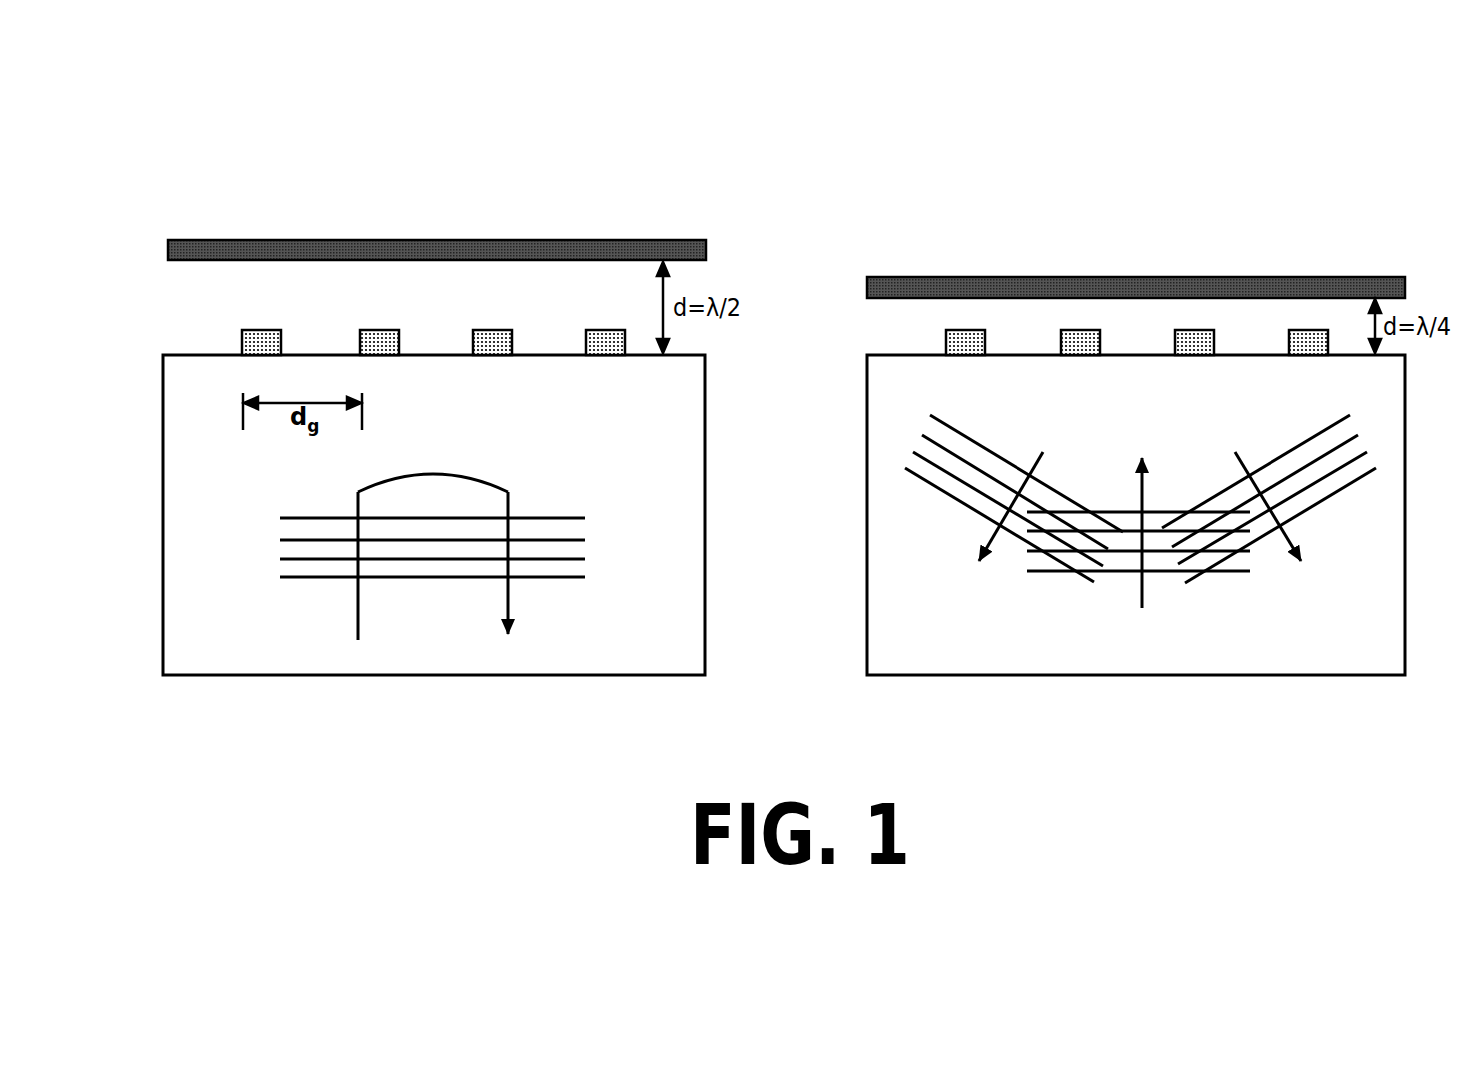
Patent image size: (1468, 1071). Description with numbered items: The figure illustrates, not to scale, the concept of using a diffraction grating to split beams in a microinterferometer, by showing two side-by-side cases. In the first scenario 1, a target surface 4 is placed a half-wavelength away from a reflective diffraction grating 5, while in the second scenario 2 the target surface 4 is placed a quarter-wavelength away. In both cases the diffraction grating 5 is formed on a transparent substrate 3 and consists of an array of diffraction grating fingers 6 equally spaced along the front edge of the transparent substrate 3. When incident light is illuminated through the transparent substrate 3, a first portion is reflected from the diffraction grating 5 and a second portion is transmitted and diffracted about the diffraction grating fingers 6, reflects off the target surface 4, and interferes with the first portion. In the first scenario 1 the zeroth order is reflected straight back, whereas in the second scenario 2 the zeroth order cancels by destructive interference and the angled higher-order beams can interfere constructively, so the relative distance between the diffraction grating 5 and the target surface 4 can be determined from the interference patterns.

The first scenario 1 is at (364, 122).
The second scenario 2 is at (1160, 210).
The transparent substrate 3 is at (163, 595).
The target surface 4 is at (217, 237).
The reflective diffraction grating 5 is at (170, 324).
The diffraction grating fingers 6 is at (265, 330).